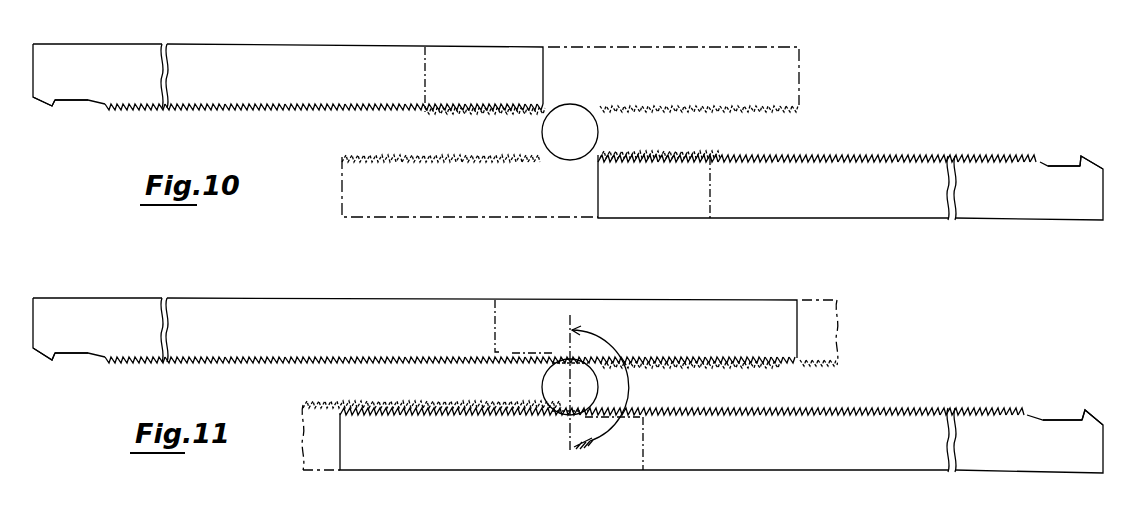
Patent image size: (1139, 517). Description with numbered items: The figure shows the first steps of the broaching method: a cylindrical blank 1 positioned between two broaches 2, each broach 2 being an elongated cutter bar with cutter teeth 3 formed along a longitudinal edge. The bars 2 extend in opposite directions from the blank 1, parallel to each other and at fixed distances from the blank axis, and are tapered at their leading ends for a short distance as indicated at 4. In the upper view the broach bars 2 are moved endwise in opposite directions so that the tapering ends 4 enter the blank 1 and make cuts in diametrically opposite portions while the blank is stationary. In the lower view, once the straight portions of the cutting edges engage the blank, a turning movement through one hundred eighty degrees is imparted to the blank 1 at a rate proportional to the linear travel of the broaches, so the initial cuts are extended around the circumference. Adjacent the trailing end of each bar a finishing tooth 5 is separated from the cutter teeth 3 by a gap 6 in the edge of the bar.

In FIG. 10, the blank 1 is at (598, 133).
In FIG. 11, the blank 1 is at (542, 387).
In FIG. 10, the broach 2 is at (244, 47).
In FIG. 11, the broach 2 is at (790, 473).
In FIG. 10, the cutter teeth 3 is at (250, 108).
In FIG. 11, the cutter teeth 3 is at (240, 362).
In FIG. 10, the tapered leading end 4 is at (440, 104).
In FIG. 11, the tapered leading end 4 is at (416, 408).
In FIG. 10, the finishing tooth 5 is at (47, 109).
In FIG. 11, the finishing tooth 5 is at (48, 363).
In FIG. 10, the gap 6 is at (80, 102).
In FIG. 11, the gap 6 is at (80, 355).